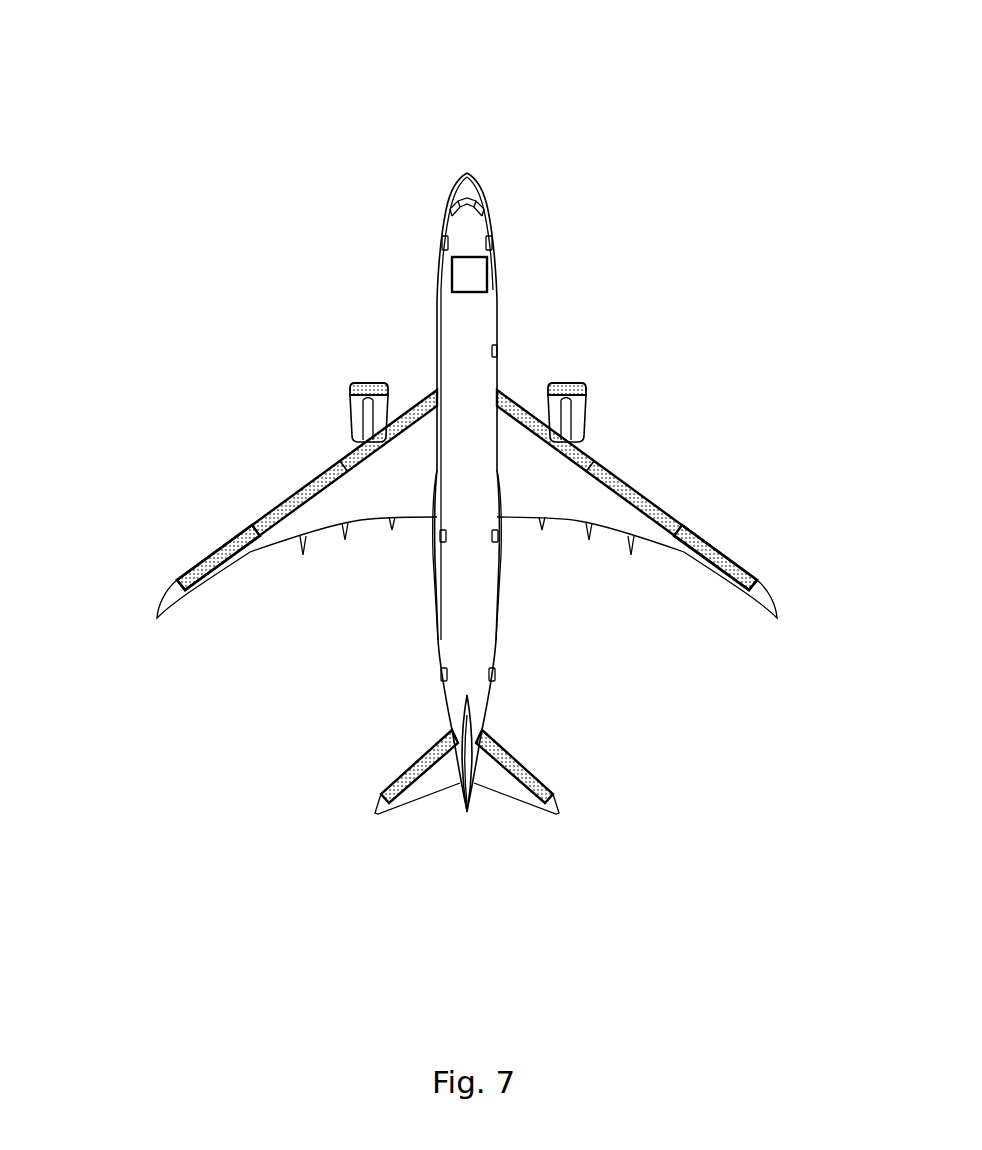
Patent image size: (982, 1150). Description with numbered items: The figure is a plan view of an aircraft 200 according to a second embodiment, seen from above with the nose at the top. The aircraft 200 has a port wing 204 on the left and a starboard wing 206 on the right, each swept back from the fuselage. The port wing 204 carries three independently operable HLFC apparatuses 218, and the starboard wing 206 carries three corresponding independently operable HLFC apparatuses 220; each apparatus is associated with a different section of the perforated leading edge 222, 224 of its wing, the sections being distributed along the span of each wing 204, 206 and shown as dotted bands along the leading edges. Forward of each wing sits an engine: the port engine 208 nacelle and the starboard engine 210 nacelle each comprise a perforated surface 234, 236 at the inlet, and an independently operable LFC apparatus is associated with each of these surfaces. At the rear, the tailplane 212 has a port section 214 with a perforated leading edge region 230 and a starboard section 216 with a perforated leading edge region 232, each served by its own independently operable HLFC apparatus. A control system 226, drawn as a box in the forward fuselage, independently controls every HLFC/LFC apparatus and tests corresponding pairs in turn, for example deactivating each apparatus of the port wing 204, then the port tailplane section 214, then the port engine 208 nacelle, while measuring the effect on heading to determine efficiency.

The aircraft 200 is at (245, 138).
The port wing 204 is at (272, 543).
The starboard wing 206 is at (651, 534).
The port engine 208 is at (350, 415).
The starboard engine 210 is at (587, 413).
The tailplane 212 is at (570, 793).
The port section of the tailplane 214 is at (405, 795).
The starboard section of the tailplane 216 is at (528, 795).
The HLFC apparatuses 218 is at (342, 447).
The HLFC apparatuses 220 is at (733, 543).
The perforated leading edge 222 is at (197, 563).
The perforated leading edge 224 is at (745, 565).
The control system 226 is at (451, 274).
The perforated leading edge region 230 is at (388, 780).
The perforated leading edge region 232 is at (548, 777).
The perforated surface 234 is at (358, 383).
The perforated surface 236 is at (580, 383).